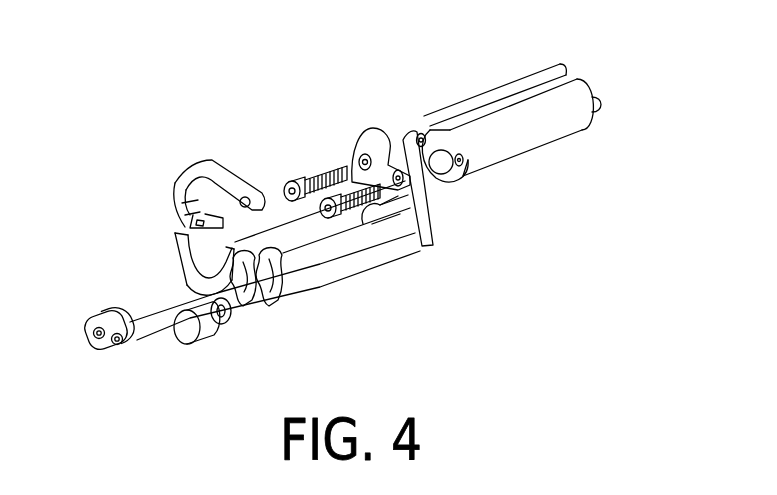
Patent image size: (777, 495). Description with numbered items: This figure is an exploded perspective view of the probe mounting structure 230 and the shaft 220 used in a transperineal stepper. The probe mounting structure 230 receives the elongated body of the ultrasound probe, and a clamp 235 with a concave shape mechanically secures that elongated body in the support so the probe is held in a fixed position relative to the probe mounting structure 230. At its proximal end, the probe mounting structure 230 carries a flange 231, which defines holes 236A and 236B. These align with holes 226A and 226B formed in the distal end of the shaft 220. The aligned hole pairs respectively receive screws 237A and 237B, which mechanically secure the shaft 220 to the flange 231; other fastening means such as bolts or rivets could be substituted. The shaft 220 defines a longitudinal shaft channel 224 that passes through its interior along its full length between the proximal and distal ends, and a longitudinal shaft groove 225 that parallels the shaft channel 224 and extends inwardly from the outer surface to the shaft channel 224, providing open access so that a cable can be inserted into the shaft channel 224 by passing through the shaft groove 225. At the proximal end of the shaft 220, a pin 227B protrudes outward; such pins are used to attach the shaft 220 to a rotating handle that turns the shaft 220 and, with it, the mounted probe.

The probe mounting structure 230 is at (122, 76).
The flange 231 is at (427, 246).
The clamp 235 is at (233, 175).
The screw 237B is at (300, 183).
The screw 237A is at (372, 192).
The hole 236B is at (365, 150).
The hole 236A is at (423, 190).
The shaft 220 is at (585, 130).
The pin 227B is at (600, 105).
The shaft groove 225 is at (553, 72).
The shaft channel 224 is at (447, 162).
The hole 226B is at (422, 137).
The hole 226A is at (465, 158).